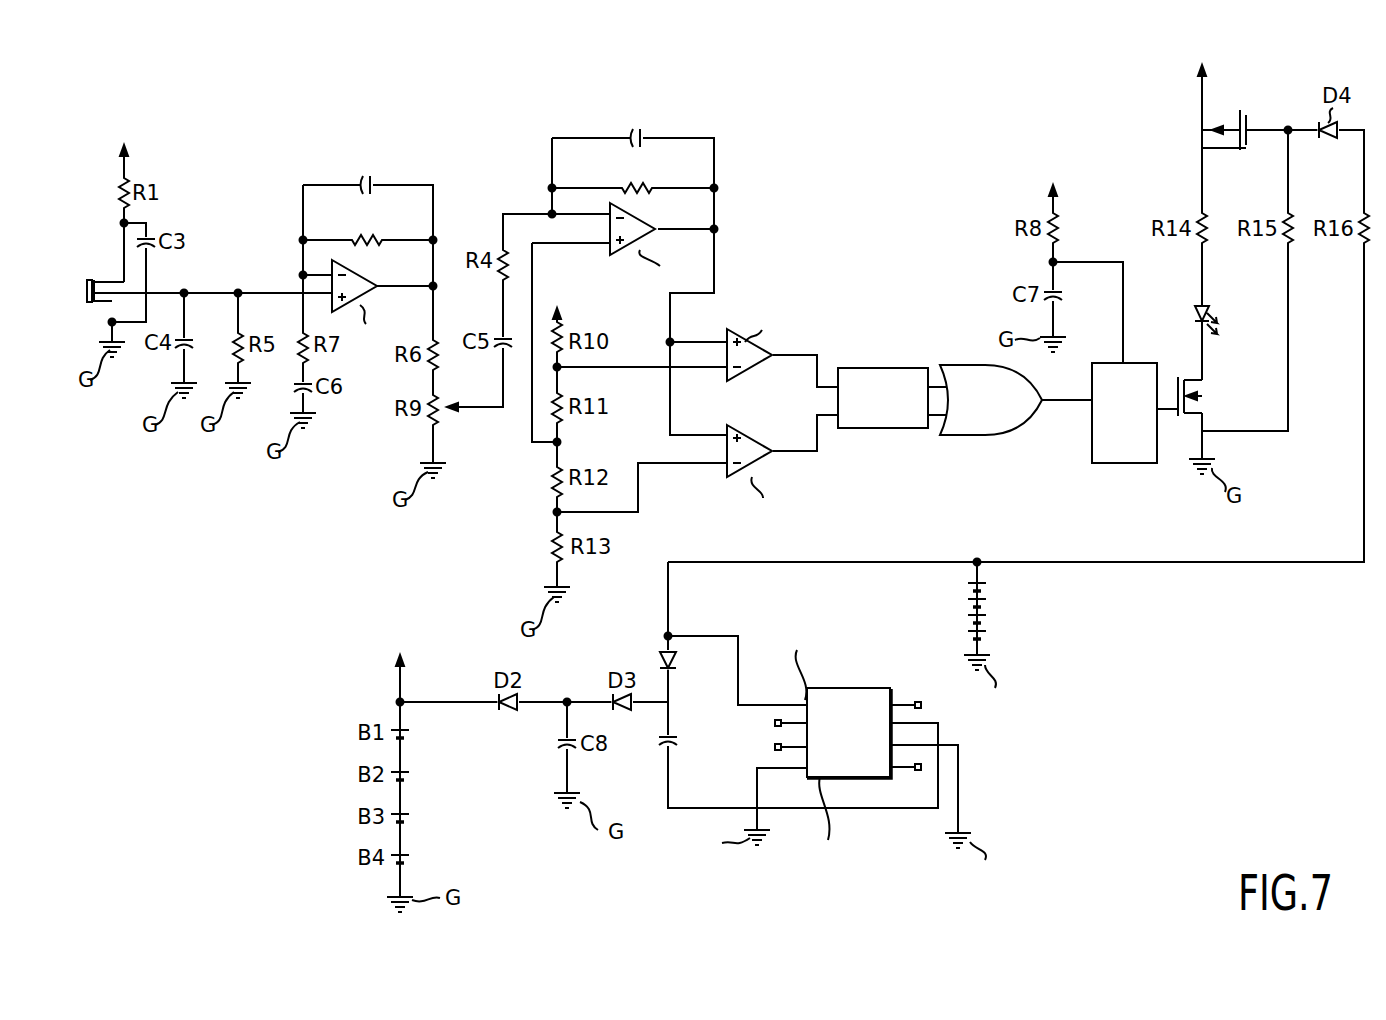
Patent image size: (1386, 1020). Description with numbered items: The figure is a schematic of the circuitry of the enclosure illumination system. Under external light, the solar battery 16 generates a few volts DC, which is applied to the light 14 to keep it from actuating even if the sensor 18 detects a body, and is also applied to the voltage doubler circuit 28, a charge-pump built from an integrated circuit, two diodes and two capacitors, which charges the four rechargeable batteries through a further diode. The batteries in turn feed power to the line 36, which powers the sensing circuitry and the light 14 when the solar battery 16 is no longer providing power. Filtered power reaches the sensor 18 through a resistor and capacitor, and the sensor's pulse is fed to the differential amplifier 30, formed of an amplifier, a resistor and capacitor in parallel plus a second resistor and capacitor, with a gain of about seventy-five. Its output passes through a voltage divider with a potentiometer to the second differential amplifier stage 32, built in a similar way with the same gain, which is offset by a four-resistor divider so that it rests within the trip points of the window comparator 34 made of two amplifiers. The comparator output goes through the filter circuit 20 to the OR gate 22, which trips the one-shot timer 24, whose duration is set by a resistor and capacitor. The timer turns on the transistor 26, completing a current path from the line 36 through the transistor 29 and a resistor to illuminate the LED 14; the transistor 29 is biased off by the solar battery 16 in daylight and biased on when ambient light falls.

The light 14 is at (1208, 310).
The solar battery 16 is at (968, 605).
The sensor 18 is at (90, 280).
The filter circuit 20 is at (890, 368).
The OR gate 22 is at (990, 437).
The one-shot timer 24 is at (1092, 463).
The transistor 26 is at (1210, 392).
The voltage doubler circuit 28 is at (553, 858).
The transistor 29 is at (1245, 112).
The differential amplifier 30 is at (288, 148).
The differential amplifier stage 32 is at (552, 112).
The window comparator 34 is at (685, 318).
The line 36 is at (124, 143).